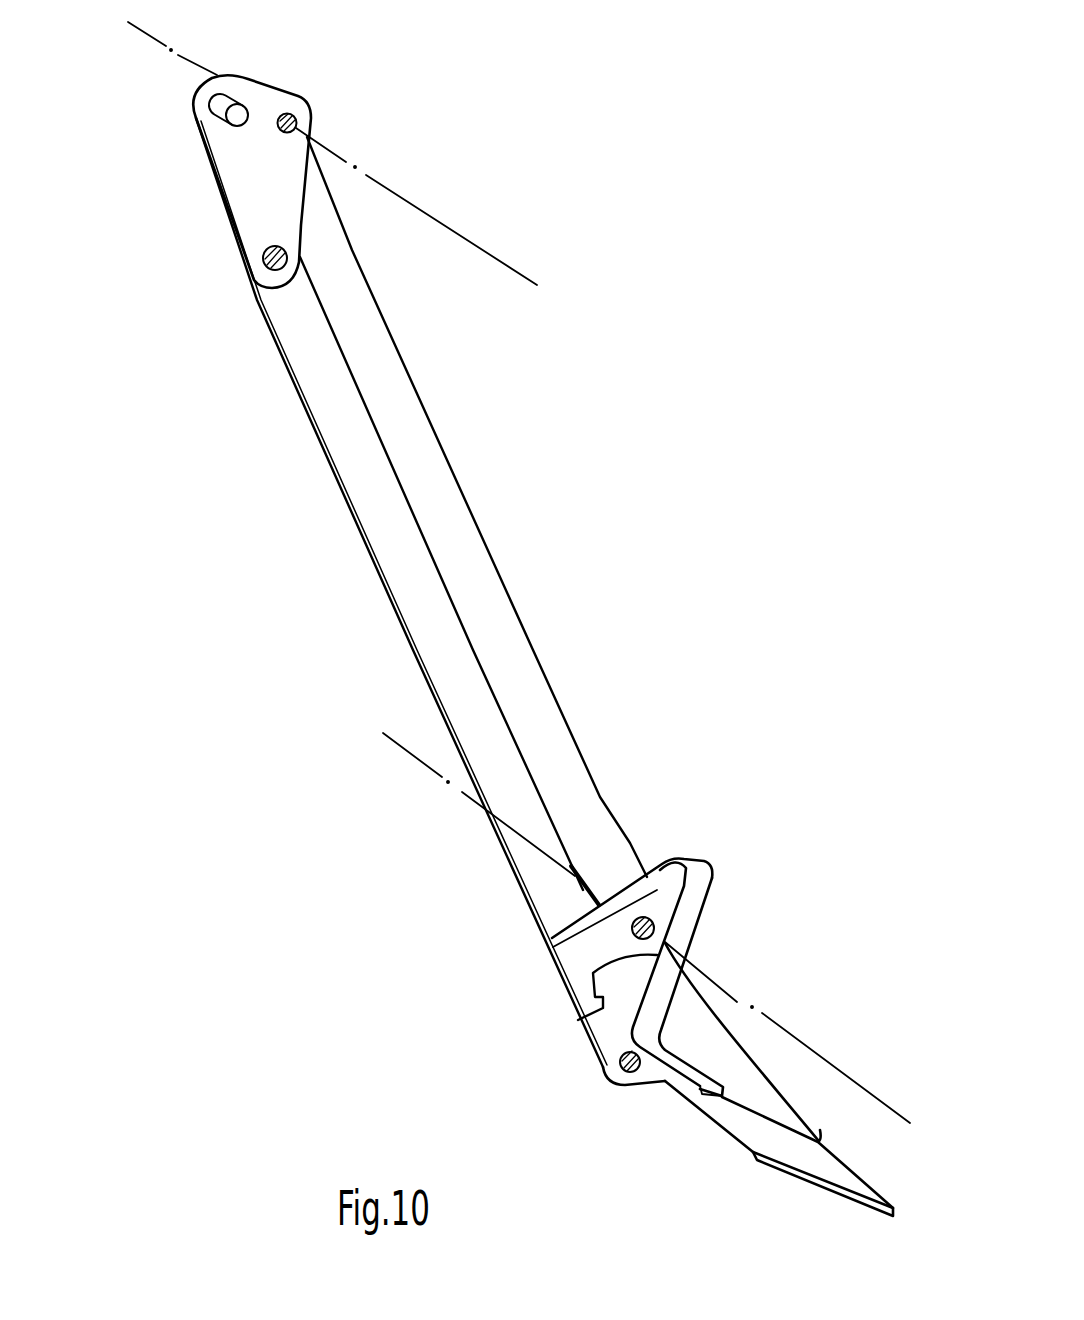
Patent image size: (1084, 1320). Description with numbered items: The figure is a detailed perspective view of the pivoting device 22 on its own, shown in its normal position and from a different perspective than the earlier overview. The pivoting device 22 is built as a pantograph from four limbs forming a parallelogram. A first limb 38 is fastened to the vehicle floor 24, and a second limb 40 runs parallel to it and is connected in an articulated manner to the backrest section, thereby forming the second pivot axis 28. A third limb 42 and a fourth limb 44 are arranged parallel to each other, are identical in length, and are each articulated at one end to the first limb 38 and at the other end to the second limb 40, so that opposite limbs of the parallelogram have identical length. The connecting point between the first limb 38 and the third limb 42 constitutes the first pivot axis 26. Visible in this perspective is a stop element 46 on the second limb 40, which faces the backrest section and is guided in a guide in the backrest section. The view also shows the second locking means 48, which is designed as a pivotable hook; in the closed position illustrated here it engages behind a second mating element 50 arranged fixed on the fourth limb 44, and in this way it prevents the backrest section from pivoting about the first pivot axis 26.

The pivoting device 22 is at (590, 638).
The vehicle floor 24 is at (800, 1240).
The first pivot axis 26 is at (803, 1043).
The second pivot axis 28 is at (500, 253).
The first limb 38 is at (690, 953).
The second limb 40 is at (247, 185).
The third limb 42 is at (393, 417).
The fourth limb 44 is at (348, 460).
The stop element 46 is at (217, 118).
The second locking means 48 is at (655, 895).
The second mating element 50 is at (607, 1010).